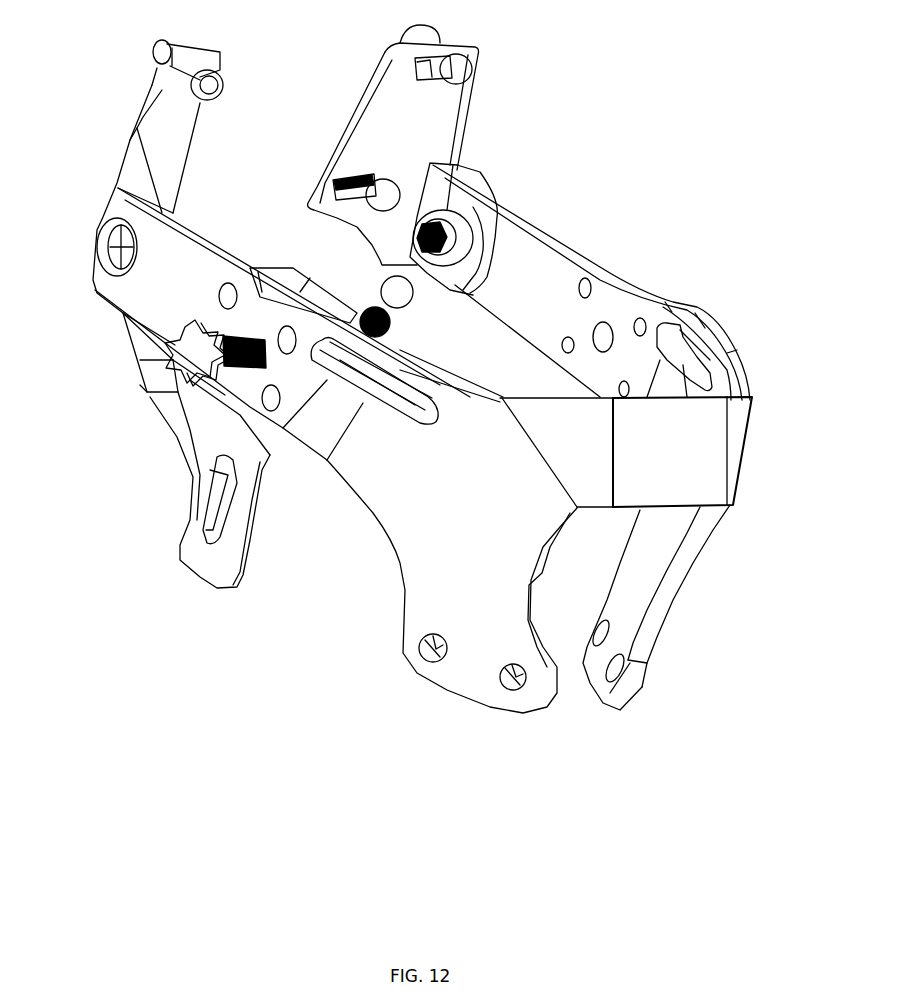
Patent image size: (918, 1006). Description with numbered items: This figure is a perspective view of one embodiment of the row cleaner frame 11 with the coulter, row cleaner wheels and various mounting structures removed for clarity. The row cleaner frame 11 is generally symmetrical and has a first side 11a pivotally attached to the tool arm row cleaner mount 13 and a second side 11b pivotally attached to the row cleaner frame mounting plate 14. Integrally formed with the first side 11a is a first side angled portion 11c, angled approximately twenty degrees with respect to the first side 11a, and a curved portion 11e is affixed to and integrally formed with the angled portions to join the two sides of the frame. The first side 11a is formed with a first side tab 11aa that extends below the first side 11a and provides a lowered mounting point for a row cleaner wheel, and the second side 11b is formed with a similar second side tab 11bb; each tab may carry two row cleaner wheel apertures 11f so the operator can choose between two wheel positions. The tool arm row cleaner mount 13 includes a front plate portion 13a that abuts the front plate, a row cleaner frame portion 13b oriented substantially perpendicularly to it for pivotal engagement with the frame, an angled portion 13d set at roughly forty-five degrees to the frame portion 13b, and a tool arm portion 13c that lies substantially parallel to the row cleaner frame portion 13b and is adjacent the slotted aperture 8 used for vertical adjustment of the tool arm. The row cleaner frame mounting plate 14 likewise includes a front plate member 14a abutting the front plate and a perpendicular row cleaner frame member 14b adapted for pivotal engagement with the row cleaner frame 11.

The slotted aperture 8 is at (220, 510).
The row cleaner frame 11 is at (683, 180).
The first side 11a is at (197, 272).
The first side tab 11aa is at (397, 562).
The second side 11b is at (543, 247).
The second side tab 11bb is at (667, 588).
The first side angled portion 11c is at (557, 423).
The curved portion 11e is at (683, 465).
The row cleaner wheel apertures 11f is at (432, 638).
The tool arm row cleaner mount 13 is at (96, 84).
The front plate portion 13a is at (175, 132).
The row cleaner frame portion 13b is at (130, 168).
The tool arm portion 13c is at (180, 550).
The angled portion 13d is at (173, 405).
The row cleaner frame mounting plate 14 is at (507, 73).
The front plate member 14a is at (380, 120).
The row cleaner frame member 14b is at (460, 190).